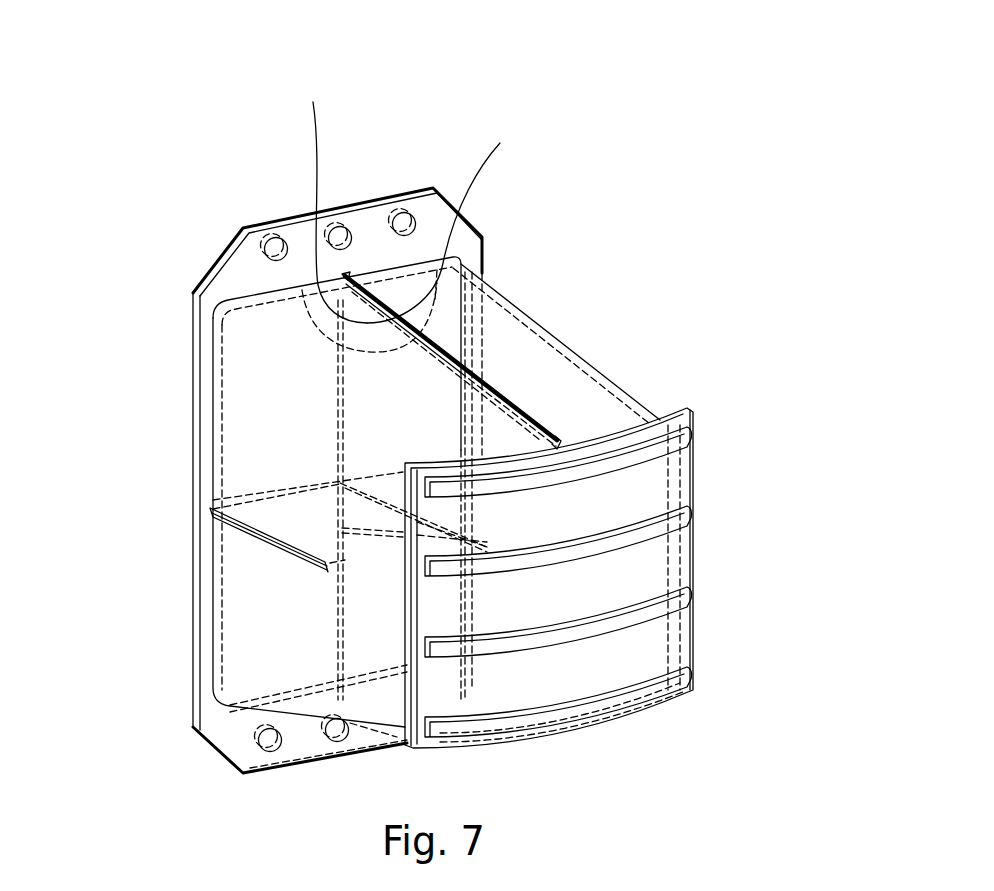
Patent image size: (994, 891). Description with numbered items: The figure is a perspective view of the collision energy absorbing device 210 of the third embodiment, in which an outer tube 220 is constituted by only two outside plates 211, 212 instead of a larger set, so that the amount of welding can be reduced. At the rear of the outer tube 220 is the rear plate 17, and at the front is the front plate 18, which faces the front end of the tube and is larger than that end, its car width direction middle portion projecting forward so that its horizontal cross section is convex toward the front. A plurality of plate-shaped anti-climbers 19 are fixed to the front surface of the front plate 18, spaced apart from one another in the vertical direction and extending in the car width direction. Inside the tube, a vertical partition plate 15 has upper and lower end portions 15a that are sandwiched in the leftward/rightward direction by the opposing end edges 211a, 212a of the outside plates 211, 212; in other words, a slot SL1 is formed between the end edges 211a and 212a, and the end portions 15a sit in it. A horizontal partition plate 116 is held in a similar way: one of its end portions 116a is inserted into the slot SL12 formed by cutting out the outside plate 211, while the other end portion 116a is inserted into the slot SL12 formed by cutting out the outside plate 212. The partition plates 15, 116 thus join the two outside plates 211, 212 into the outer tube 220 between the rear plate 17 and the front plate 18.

The collision energy absorbing device 210 is at (587, 117).
The rear plate 17 is at (217, 263).
The outside plate 211 is at (240, 353).
The end edge 211a is at (302, 292).
The slot SL1 is at (330, 194).
The vertical partition plate 15 is at (392, 292).
The end portion 15a is at (447, 217).
The outside plate 212 is at (510, 297).
The end edge 212a is at (437, 270).
The outer tube 220 is at (575, 343).
The front plate 18 is at (685, 410).
The anti-climber 19 is at (650, 465).
The slot SL12 is at (258, 508).
The horizontal partition plate 116 is at (237, 533).
The end portion 116a is at (262, 550).